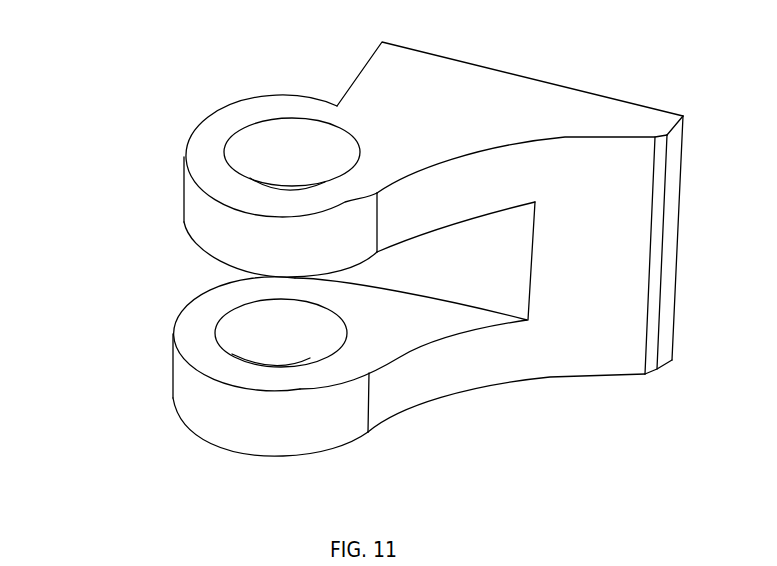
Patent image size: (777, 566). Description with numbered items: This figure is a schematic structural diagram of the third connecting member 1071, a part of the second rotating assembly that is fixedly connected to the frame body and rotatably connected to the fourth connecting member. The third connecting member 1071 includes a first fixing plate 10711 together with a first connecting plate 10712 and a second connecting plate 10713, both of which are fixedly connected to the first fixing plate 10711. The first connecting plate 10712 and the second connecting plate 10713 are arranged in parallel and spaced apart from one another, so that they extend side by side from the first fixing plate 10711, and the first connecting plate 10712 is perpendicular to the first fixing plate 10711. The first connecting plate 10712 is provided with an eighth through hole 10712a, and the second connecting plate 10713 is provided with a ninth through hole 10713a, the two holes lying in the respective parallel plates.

The third connecting member 1071 is at (193, 74).
The first fixing plate 10711 is at (495, 280).
The first connecting plate 10712 is at (377, 157).
The eighth through hole 10712a is at (302, 150).
The second connecting plate 10713 is at (375, 325).
The ninth through hole 10713a is at (302, 343).